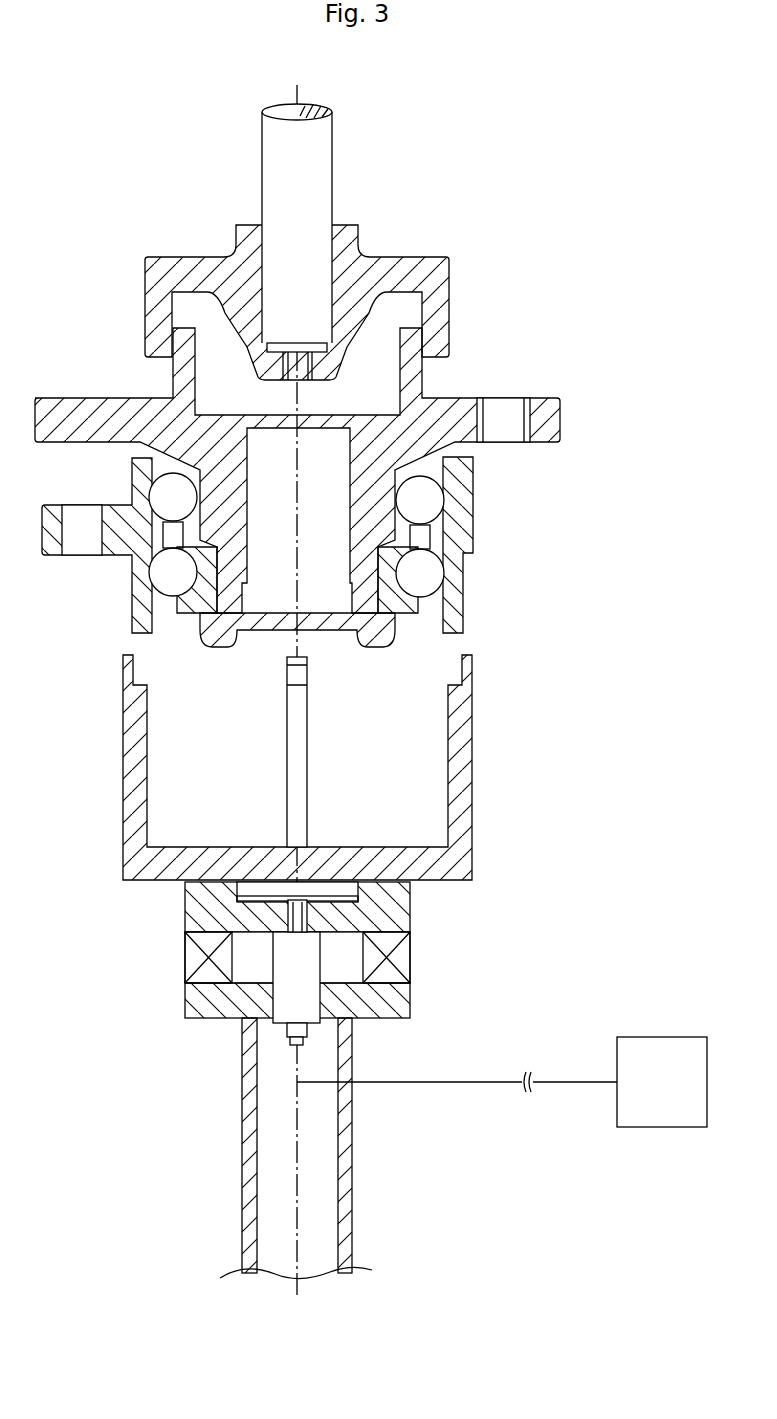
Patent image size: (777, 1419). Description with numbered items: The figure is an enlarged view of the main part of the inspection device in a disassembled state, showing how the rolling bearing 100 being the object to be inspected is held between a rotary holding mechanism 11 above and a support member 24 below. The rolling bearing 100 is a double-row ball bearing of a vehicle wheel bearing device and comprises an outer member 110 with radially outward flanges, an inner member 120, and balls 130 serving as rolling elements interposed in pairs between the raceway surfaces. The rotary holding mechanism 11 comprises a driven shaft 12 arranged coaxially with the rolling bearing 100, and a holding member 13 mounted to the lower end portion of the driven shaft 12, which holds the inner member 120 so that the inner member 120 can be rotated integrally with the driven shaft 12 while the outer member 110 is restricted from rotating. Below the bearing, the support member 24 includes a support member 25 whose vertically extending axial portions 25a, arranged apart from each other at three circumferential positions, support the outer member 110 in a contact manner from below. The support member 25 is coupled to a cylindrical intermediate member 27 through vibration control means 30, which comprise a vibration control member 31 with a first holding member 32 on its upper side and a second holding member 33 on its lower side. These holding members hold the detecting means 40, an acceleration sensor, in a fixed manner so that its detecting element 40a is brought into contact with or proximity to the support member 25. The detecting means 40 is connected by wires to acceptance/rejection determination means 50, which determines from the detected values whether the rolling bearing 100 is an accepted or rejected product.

The rotary holding mechanism 11 is at (297, 236).
The driven shaft 12 is at (320, 158).
The holding member 13 is at (398, 266).
The rolling bearing 100 is at (320, 470).
The outer member 110 is at (471, 542).
The inner member 120 is at (452, 420).
The balls 130 is at (425, 500).
The support member 24 is at (308, 767).
The support member 25 is at (122, 810).
The axial portions 25a is at (132, 742).
The vibration control means 30 is at (229, 969).
The vibration control member 31 is at (190, 960).
The first holding member 32 is at (190, 912).
The second holding member 33 is at (205, 1006).
The detecting means 40 is at (312, 970).
The detecting element 40a is at (308, 912).
The intermediate member 27 is at (245, 1157).
The acceptance/rejection determination means 50 is at (660, 1050).